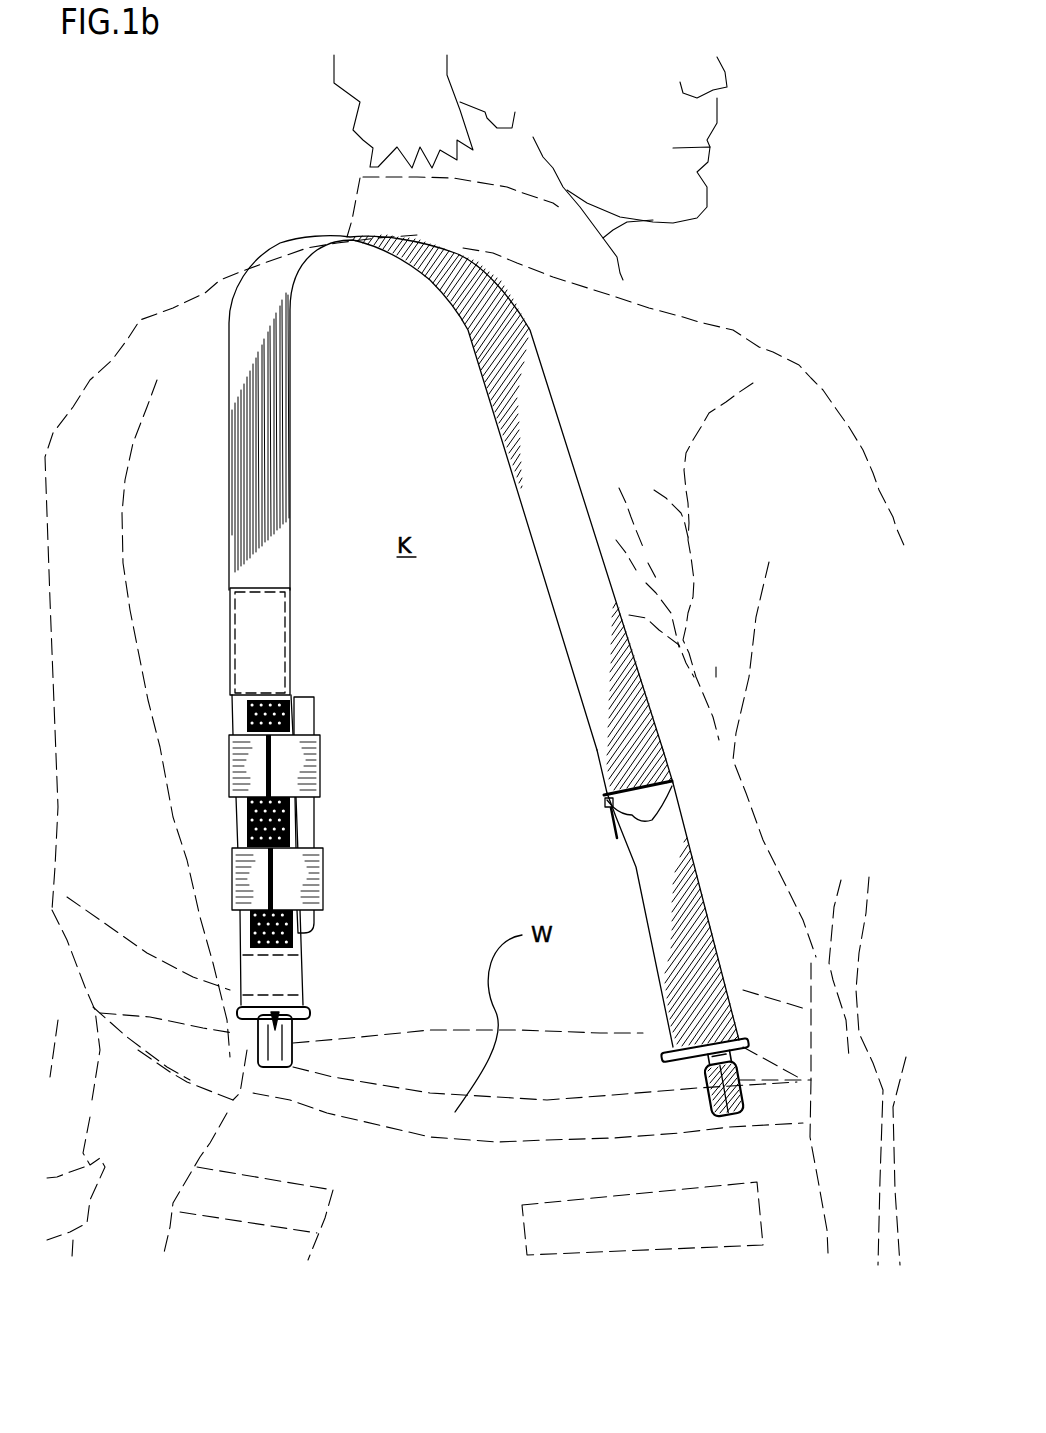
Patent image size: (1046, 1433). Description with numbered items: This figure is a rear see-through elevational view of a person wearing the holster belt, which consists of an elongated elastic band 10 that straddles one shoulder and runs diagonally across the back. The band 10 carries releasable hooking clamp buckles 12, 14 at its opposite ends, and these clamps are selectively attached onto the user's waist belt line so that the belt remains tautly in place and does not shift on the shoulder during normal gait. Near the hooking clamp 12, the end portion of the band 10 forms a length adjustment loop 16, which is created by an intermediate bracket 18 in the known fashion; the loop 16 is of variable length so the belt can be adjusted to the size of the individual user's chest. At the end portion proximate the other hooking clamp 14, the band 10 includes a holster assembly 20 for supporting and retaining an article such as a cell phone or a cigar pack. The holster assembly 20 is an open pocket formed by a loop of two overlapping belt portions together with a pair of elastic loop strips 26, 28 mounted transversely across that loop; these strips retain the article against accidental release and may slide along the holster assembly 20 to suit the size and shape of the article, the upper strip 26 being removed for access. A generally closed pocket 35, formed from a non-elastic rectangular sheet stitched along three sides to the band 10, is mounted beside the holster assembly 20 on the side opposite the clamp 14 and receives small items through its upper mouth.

The elastic band 10 is at (253, 328).
The hooking clamp buckle 12 is at (730, 1097).
The hooking clamp buckle 14 is at (262, 1052).
The length adjustment loop 16 is at (661, 888).
The intermediate bracket 18 is at (649, 802).
The holster assembly 20 is at (234, 828).
The elastic loop strip 26 is at (285, 763).
The elastic loop strip 28 is at (300, 875).
The closed pocket 35 is at (265, 634).